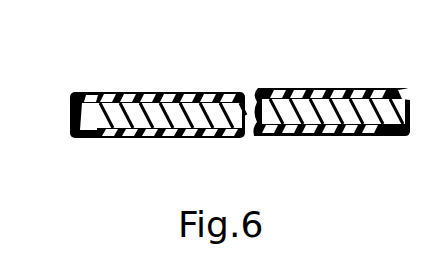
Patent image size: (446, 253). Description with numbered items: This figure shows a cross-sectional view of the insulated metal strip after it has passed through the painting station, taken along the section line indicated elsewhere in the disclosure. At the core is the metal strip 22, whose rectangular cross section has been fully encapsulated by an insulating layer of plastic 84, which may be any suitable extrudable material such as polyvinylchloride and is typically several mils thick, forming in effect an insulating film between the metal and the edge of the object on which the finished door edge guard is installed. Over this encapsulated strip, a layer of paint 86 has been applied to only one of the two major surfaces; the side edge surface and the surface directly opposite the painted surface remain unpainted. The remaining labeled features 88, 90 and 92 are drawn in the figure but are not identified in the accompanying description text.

The layer of paint 86 is at (97, 84).
The insulating layer of plastic 84 is at (177, 92).
The lower braid strands 88 is at (130, 129).
The end face of sleeve 90 is at (80, 120).
The metal strip 22 is at (289, 89).
The end of tube section 92 is at (413, 106).